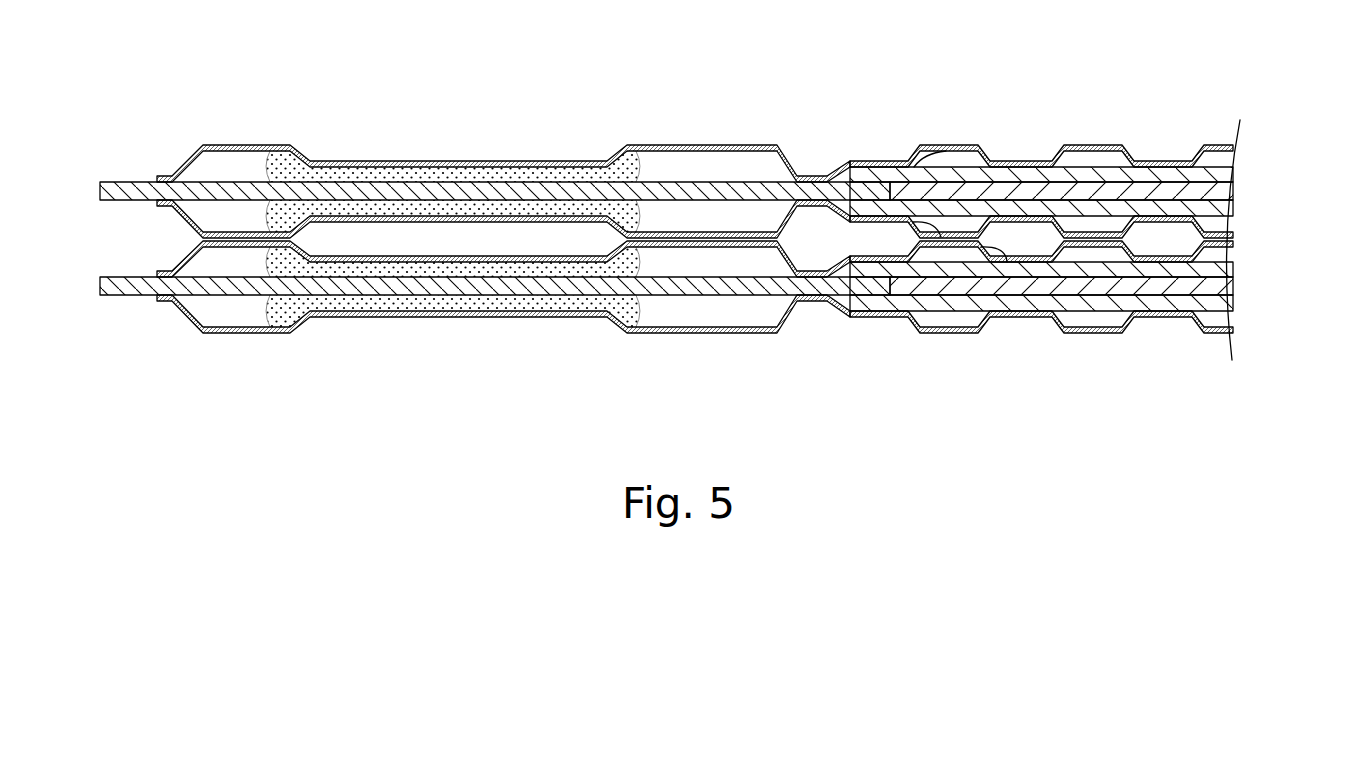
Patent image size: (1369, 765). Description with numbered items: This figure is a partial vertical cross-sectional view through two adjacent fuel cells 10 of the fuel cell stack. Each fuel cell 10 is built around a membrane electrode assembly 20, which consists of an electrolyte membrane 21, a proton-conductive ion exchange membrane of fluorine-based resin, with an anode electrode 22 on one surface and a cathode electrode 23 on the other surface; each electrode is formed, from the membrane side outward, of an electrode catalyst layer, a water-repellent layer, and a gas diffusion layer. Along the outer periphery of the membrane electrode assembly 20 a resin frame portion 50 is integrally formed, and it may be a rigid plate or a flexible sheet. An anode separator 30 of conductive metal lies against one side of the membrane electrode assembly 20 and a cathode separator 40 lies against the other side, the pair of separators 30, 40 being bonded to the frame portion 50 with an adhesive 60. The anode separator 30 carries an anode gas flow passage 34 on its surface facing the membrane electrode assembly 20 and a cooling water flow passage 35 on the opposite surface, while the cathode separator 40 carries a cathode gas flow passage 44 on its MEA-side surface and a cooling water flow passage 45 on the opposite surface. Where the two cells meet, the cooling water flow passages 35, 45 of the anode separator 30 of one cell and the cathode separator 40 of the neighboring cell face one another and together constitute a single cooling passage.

The fuel cell 10 is at (124, 150).
The membrane electrode assembly 20 is at (1296, 150).
The electrolyte membrane 21 is at (1226, 193).
The anode electrode 22 is at (1226, 211).
The cathode electrode 23 is at (1226, 173).
The anode separator 30 is at (748, 234).
The anode gas flow passage 34 is at (942, 246).
The cooling water flow passage 35 is at (1047, 232).
The cathode separator 40 is at (708, 146).
The cathode gas flow passage 44 is at (933, 146).
The cooling water flow passage 45 is at (999, 162).
The frame portion 50 is at (235, 188).
The adhesive 60 is at (333, 172).